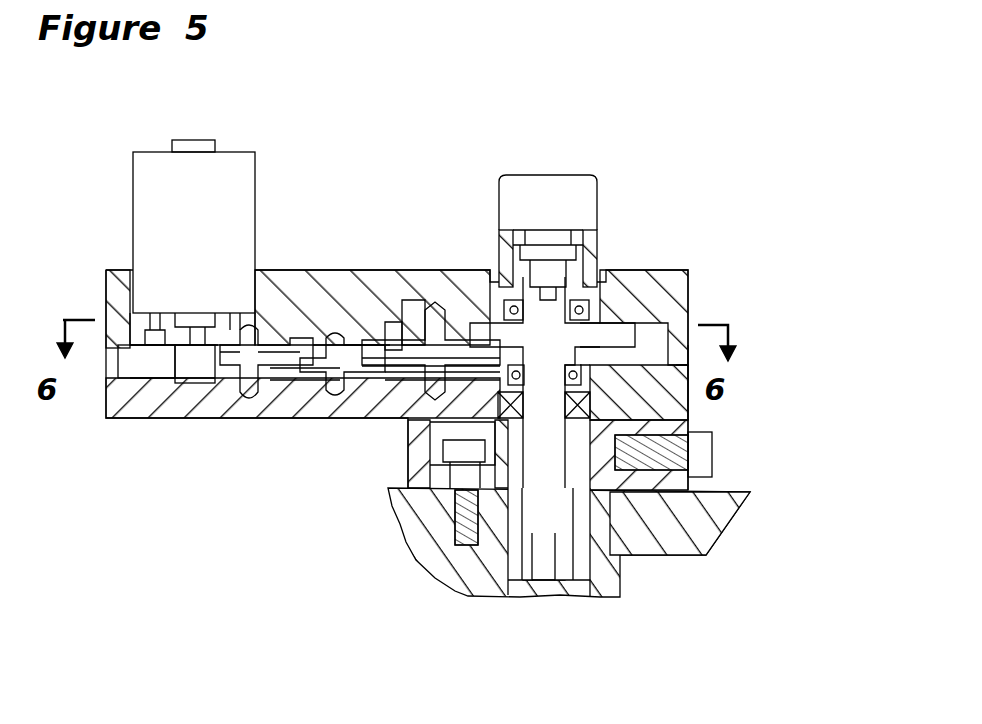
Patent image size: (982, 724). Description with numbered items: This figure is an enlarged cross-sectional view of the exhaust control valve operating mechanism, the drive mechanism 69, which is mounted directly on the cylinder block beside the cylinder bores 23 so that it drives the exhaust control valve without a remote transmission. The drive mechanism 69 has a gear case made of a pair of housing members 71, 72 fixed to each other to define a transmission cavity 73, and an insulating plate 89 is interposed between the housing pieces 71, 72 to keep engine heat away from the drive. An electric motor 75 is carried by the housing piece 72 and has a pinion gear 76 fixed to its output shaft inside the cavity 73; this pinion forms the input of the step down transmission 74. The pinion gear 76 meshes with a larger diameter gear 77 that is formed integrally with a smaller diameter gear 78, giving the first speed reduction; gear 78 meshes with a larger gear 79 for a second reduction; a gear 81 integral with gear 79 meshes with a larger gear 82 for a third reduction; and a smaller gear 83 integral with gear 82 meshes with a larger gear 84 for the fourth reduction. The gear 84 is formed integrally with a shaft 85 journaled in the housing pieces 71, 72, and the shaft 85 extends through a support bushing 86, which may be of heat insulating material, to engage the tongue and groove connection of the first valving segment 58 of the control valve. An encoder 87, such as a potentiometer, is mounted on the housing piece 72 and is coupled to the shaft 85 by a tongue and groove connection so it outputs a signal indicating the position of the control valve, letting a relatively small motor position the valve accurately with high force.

The cylinder bore 23 is at (635, 566).
The valving segment 58 is at (572, 594).
The drive mechanism 69 is at (444, 152).
The housing member 71 is at (105, 398).
The housing member 72 is at (100, 296).
The transmission cavity 73 is at (672, 300).
The transmission 74 is at (152, 358).
The electric motor 75 is at (240, 168).
The pinion gear 76 is at (190, 382).
The larger diameter gear 77 is at (284, 356).
The smaller diameter gear 78 is at (263, 373).
The larger gear 79 is at (316, 418).
The gear 81 is at (350, 352).
The larger gear 82 is at (377, 352).
The smaller gear 83 is at (462, 330).
The larger gear 84 is at (658, 332).
The shaft 85 is at (625, 337).
The support bushing 86 is at (643, 490).
The encoder 87 is at (580, 188).
The insulating plate 89 is at (690, 368).